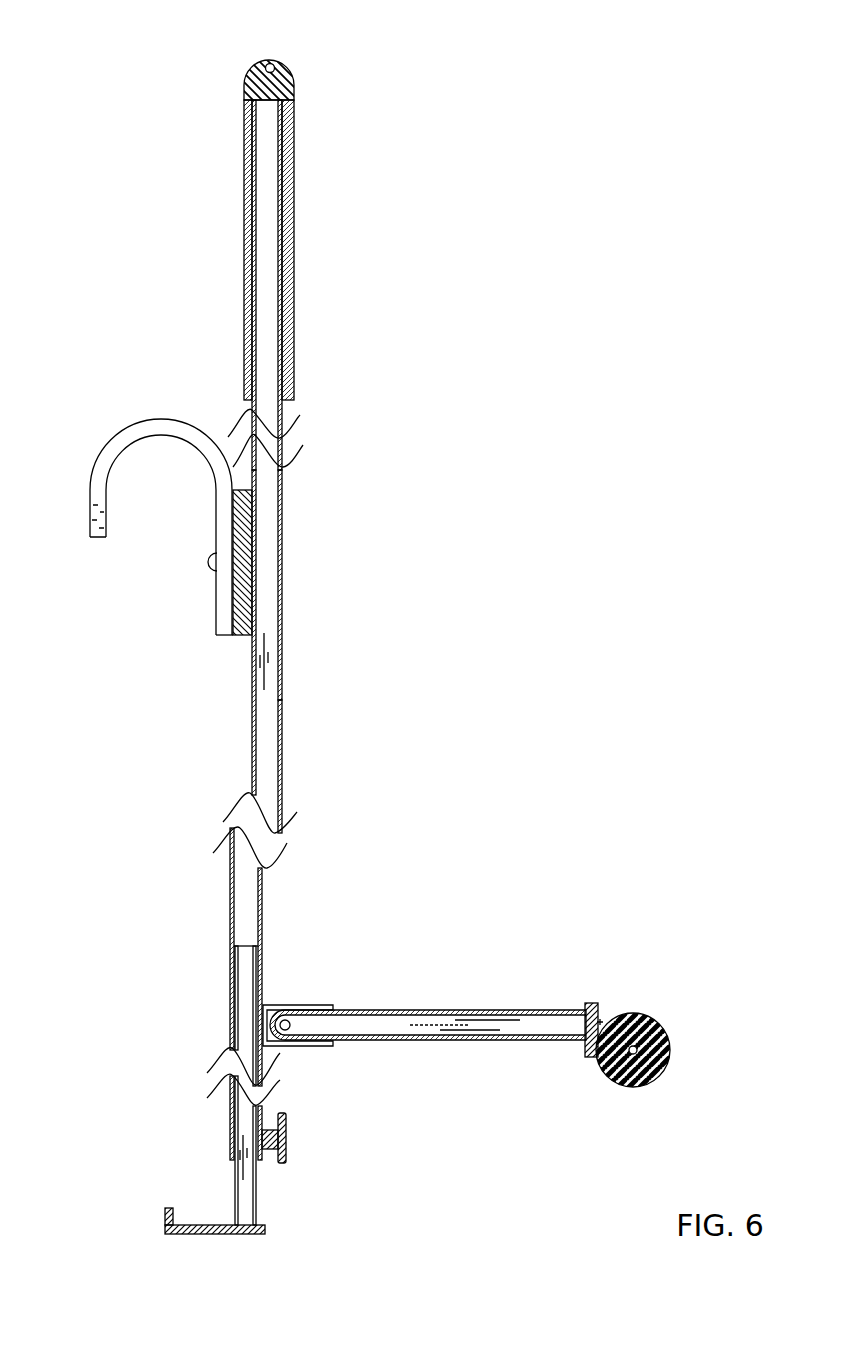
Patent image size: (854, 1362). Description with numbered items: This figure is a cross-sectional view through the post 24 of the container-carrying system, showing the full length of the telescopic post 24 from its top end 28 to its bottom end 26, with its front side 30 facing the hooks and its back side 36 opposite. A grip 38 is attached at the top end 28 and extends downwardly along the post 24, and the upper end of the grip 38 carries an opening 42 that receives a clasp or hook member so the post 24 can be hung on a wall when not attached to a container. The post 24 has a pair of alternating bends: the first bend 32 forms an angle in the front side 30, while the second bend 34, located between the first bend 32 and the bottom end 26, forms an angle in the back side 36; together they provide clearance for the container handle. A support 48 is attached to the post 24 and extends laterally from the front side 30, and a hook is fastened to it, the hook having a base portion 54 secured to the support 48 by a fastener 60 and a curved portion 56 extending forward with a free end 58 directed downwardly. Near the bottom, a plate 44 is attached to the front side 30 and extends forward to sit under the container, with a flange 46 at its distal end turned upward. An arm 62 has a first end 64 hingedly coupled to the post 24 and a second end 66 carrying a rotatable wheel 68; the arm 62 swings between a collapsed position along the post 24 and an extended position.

The opening 42 is at (268, 62).
The bottom end 26 is at (272, 101).
The grip 38 is at (290, 374).
The curved portion 56 is at (161, 420).
The free end 58 is at (95, 538).
The fastener 60 is at (212, 563).
The base portion 54 is at (221, 628).
The support 48 is at (243, 555).
The back side 36 is at (283, 643).
The front side 30 is at (251, 694).
The post 24 is at (265, 738).
The first bend 32 is at (284, 800).
The second bend 34 is at (222, 869).
The first end 64 is at (270, 1005).
The arm 62 is at (483, 1012).
The second end 66 is at (588, 1003).
The wheel 68 is at (625, 1086).
The flange 46 is at (168, 1208).
The plate 44 is at (205, 1235).
The top end 28 is at (247, 1224).